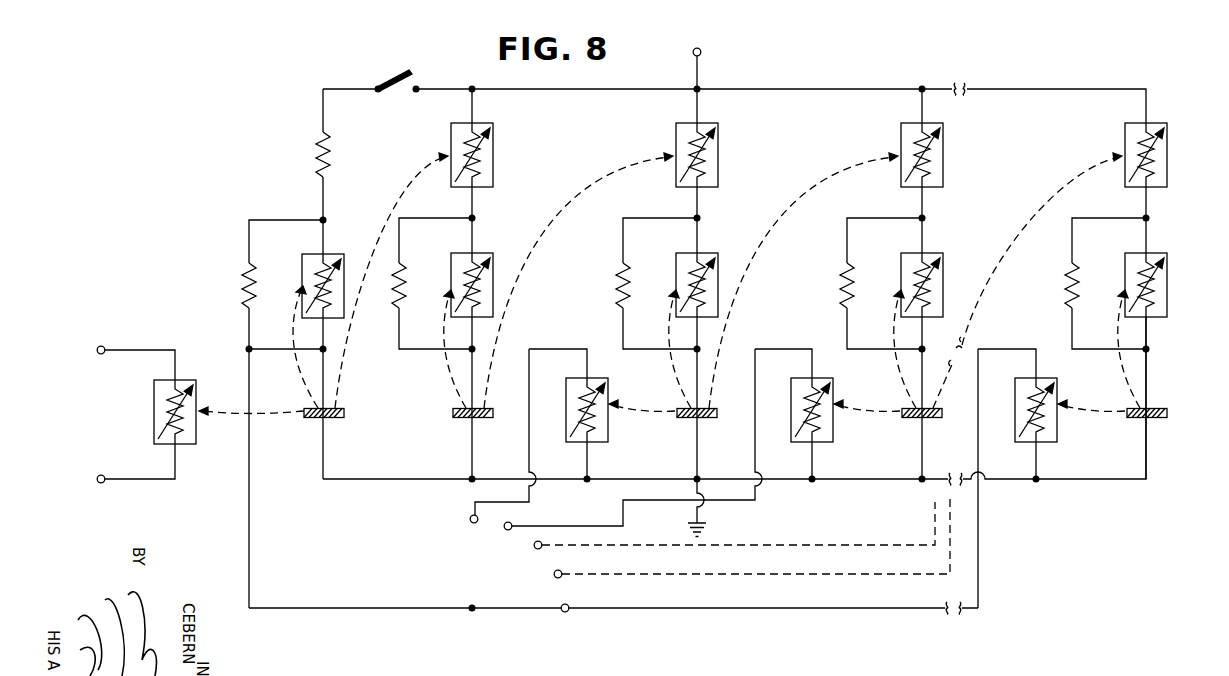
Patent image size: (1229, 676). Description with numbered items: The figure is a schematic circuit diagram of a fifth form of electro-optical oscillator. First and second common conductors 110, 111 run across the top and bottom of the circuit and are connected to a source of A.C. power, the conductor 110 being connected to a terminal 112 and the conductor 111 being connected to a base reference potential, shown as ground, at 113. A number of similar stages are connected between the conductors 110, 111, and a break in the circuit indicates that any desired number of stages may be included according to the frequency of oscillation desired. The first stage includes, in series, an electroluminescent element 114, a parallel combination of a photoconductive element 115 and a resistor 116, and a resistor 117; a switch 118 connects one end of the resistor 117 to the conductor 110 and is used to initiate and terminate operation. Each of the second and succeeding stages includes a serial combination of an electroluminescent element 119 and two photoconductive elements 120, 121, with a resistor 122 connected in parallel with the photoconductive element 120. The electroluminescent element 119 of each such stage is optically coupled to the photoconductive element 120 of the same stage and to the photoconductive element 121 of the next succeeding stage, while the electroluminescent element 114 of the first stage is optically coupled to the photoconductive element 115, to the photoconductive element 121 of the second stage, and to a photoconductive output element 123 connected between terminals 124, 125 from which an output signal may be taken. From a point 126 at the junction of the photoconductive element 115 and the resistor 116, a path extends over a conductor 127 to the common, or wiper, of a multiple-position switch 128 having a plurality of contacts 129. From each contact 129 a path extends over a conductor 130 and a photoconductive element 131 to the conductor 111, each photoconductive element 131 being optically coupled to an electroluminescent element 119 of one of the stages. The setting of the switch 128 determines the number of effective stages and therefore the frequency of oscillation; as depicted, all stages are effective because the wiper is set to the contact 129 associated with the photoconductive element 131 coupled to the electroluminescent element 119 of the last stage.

The first common conductor 110 is at (796, 86).
The second common conductor 111 is at (790, 481).
The terminal 112 is at (701, 49).
The ground 113 is at (705, 524).
The electroluminescent element 114 is at (330, 419).
The photoconductive element 115 is at (308, 253).
The resistor 116 is at (243, 283).
The resistor 117 is at (318, 150).
The switch 118 is at (398, 76).
The electroluminescent element 119 is at (468, 419).
The photoconductive element 120 is at (490, 253).
The photoconductive element 121 is at (495, 135).
The resistor 122 is at (399, 262).
The photoconductive output element 123 is at (152, 402).
The terminal 124 is at (98, 347).
The terminal 125 is at (98, 482).
The point 126 is at (247, 348).
The conductor 127 is at (250, 535).
The multiple-position switch 128 is at (512, 610).
The contacts 129 is at (556, 606).
The conductor 130 is at (686, 610).
The photoconductive element 131 is at (600, 378).